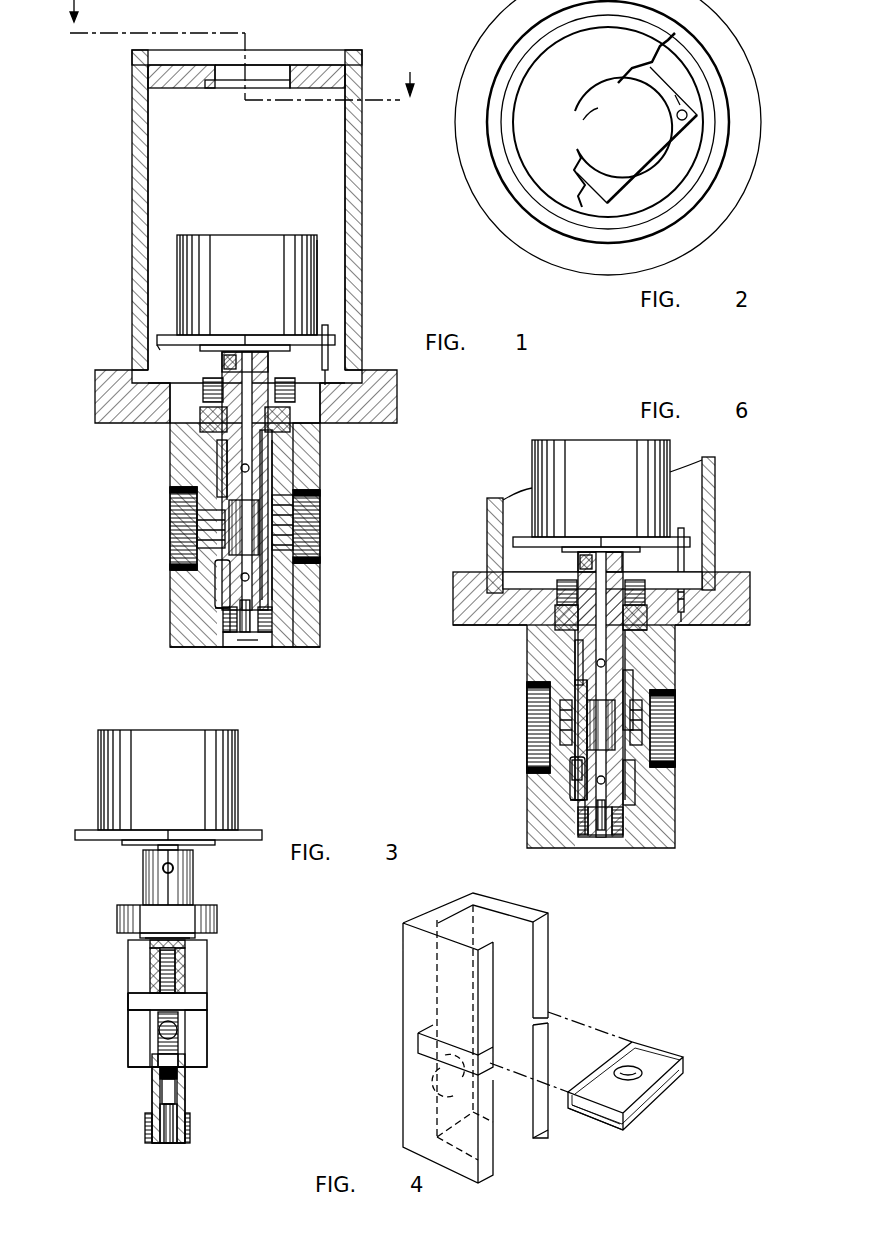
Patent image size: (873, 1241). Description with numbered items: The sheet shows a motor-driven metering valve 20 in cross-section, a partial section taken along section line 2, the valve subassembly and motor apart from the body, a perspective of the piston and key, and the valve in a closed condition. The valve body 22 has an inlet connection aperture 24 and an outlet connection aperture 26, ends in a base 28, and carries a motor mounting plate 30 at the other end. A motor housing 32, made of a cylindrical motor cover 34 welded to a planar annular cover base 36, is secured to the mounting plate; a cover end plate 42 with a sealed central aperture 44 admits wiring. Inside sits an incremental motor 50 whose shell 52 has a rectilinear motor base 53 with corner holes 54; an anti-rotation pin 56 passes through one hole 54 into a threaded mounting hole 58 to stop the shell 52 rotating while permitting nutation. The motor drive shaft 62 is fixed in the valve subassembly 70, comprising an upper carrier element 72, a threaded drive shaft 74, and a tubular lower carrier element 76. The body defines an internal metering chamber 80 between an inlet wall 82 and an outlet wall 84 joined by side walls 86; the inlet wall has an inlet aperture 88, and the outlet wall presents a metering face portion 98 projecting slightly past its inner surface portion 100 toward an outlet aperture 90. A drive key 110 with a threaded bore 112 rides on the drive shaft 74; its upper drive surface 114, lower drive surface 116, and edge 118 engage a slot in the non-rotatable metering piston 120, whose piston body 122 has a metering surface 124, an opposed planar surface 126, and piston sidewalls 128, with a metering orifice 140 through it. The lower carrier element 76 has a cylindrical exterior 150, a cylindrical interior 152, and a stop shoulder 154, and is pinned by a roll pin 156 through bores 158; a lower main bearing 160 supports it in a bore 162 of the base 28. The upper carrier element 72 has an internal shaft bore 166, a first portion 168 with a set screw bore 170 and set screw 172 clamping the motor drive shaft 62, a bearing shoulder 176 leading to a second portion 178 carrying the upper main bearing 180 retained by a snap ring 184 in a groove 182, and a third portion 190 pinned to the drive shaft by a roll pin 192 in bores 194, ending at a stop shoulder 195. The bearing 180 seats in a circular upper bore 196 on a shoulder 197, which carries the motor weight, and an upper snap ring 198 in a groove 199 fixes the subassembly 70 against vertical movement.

In FIG. 1, the section line 2 is at (242, 50).
In FIG. 1, the valve 20 is at (140, 50).
In FIG. 1, the valve body 22 is at (170, 645).
In FIG. 6, the valve body 22 is at (675, 835).
In FIG. 1, the inlet connection aperture 24 is at (300, 557).
In FIG. 6, the inlet connection aperture 24 is at (670, 765).
In FIG. 1, the outlet connection aperture 26 is at (180, 560).
In FIG. 6, the outlet connection aperture 26 is at (570, 770).
In FIG. 1, the base 28 is at (290, 650).
In FIG. 1, the motor mounting plate 30 is at (397, 408).
In FIG. 1, the motor housing 32 is at (132, 150).
In FIG. 6, the motor housing 32 is at (487, 498).
In FIG. 1, the motor cover 34 is at (132, 235).
In FIG. 2, the motor cover 34 is at (700, 190).
In FIG. 6, the motor cover 34 is at (487, 520).
In FIG. 1, the cover base 36 is at (95, 372).
In FIG. 2, the cover base 36 is at (545, 258).
In FIG. 1, the cover end plate 42 is at (325, 70).
In FIG. 2, the cover end plate 42 is at (618, 53).
In FIG. 1, the central aperture 44 is at (278, 68).
In FIG. 2, the central aperture 44 is at (585, 108).
In FIG. 1, the motor 50 is at (255, 235).
In FIG. 2, the motor 50 is at (622, 153).
In FIG. 6, the motor 50 is at (585, 440).
In FIG. 3, the motor 50 is at (115, 730).
In FIG. 1, the shell 52 is at (317, 252).
In FIG. 2, the shell 52 is at (690, 105).
In FIG. 1, the motor base 53 is at (160, 340).
In FIG. 2, the motor base 53 is at (675, 95).
In FIG. 3, the motor base 53 is at (262, 835).
In FIG. 2, the holes 54 is at (700, 108).
In FIG. 1, the anti-rotation pin 56 is at (330, 360).
In FIG. 6, the anti-rotation pin 56 is at (684, 530).
In FIG. 1, the threaded mounting hole 58 is at (300, 428).
In FIG. 1, the motor drive shaft 62 is at (290, 348).
In FIG. 6, the motor drive shaft 62 is at (640, 550).
In FIG. 3, the motor drive shaft 62 is at (190, 845).
In FIG. 1, the valve subassembly 70 is at (270, 478).
In FIG. 6, the valve subassembly 70 is at (600, 694).
In FIG. 3, the valve subassembly 70 is at (207, 958).
In FIG. 3, the upper carrier element 72 is at (143, 858).
In FIG. 6, the drive shaft 74 is at (675, 748).
In FIG. 6, the lower carrier element 76 is at (598, 835).
In FIG. 3, the lower carrier element 76 is at (185, 1110).
In FIG. 1, the internal metering chamber 80 is at (268, 588).
In FIG. 6, the internal metering chamber 80 is at (625, 790).
In FIG. 1, the inlet wall 82 is at (272, 505).
In FIG. 1, the outlet wall 84 is at (215, 580).
In FIG. 1, the side walls 86 is at (225, 625).
In FIG. 1, the inlet aperture 88 is at (318, 530).
In FIG. 6, the inlet aperture 88 is at (660, 715).
In FIG. 1, the outlet aperture 90 is at (225, 540).
In FIG. 6, the outlet aperture 90 is at (560, 755).
In FIG. 1, the metering face portion 98 is at (180, 515).
In FIG. 6, the metering face portion 98 is at (565, 745).
In FIG. 1, the inner surface portion 100 is at (195, 625).
In FIG. 6, the inner surface portion 100 is at (570, 810).
In FIG. 3, the drive key 110 is at (207, 1003).
In FIG. 4, the drive key 110 is at (690, 1068).
In FIG. 4, the bore 112 is at (640, 1048).
In FIG. 3, the upper drive surface 114 is at (200, 993).
In FIG. 4, the upper drive surface 114 is at (632, 1042).
In FIG. 3, the lower drive surface 116 is at (195, 1015).
In FIG. 3, the edge 118 is at (128, 1000).
In FIG. 4, the edge 118 is at (600, 1130).
In FIG. 4, the metering piston 120 is at (548, 965).
In FIG. 1, the piston body 122 is at (222, 465).
In FIG. 6, the piston body 122 is at (580, 725).
In FIG. 3, the piston body 122 is at (128, 1020).
In FIG. 4, the piston body 122 is at (460, 905).
In FIG. 1, the metering surface 124 is at (225, 480).
In FIG. 6, the metering surface 124 is at (560, 712).
In FIG. 3, the planar surface 126 is at (135, 1043).
In FIG. 4, the planar surface 126 is at (550, 935).
In FIG. 4, the piston sidewalls 128 is at (410, 1097).
In FIG. 1, the metering orifice 140 is at (240, 530).
In FIG. 6, the metering orifice 140 is at (570, 785).
In FIG. 3, the metering orifice 140 is at (178, 1040).
In FIG. 3, the cylindrical exterior 150 is at (152, 1100).
In FIG. 3, the cylindrical interior 152 is at (165, 1143).
In FIG. 3, the stop shoulder 154 is at (185, 1065).
In FIG. 3, the roll pin 156 is at (178, 1088).
In FIG. 3, the bores 158 is at (155, 1080).
In FIG. 1, the lower main bearing 160 is at (275, 640).
In FIG. 6, the lower main bearing 160 is at (635, 835).
In FIG. 3, the lower main bearing 160 is at (145, 1128).
In FIG. 1, the bore 162 is at (240, 647).
In FIG. 6, the internal shaft bore 166 is at (630, 660).
In FIG. 6, the first portion 168 is at (558, 615).
In FIG. 3, the first portion 168 is at (193, 868).
In FIG. 3, the set screw bore 170 is at (170, 870).
In FIG. 6, the set screw 172 is at (580, 570).
In FIG. 3, the set screw 172 is at (160, 870).
In FIG. 6, the bearing shoulder 176 is at (565, 650).
In FIG. 6, the second portion 178 is at (645, 615).
In FIG. 3, the second portion 178 is at (200, 935).
In FIG. 6, the upper main bearing 180 is at (570, 655).
In FIG. 3, the upper main bearing 180 is at (217, 915).
In FIG. 6, the groove 182 is at (580, 700).
In FIG. 6, the snap ring 184 is at (640, 640).
In FIG. 3, the snap ring 184 is at (140, 925).
In FIG. 1, the third portion 190 is at (262, 577).
In FIG. 3, the third portion 190 is at (155, 960).
In FIG. 1, the roll pin 192 is at (275, 620).
In FIG. 6, the roll pin 192 is at (630, 680).
In FIG. 3, the roll pin 192 is at (178, 960).
In FIG. 3, the bores 194 is at (150, 948).
In FIG. 6, the stop shoulder 195 is at (630, 730).
In FIG. 1, the circular upper bore 196 is at (157, 337).
In FIG. 6, the circular upper bore 196 is at (700, 565).
In FIG. 1, the shoulder 197 is at (218, 450).
In FIG. 6, the shoulder 197 is at (575, 688).
In FIG. 1, the upper snap ring 198 is at (205, 415).
In FIG. 6, the upper snap ring 198 is at (560, 635).
In FIG. 1, the groove 199 is at (300, 448).